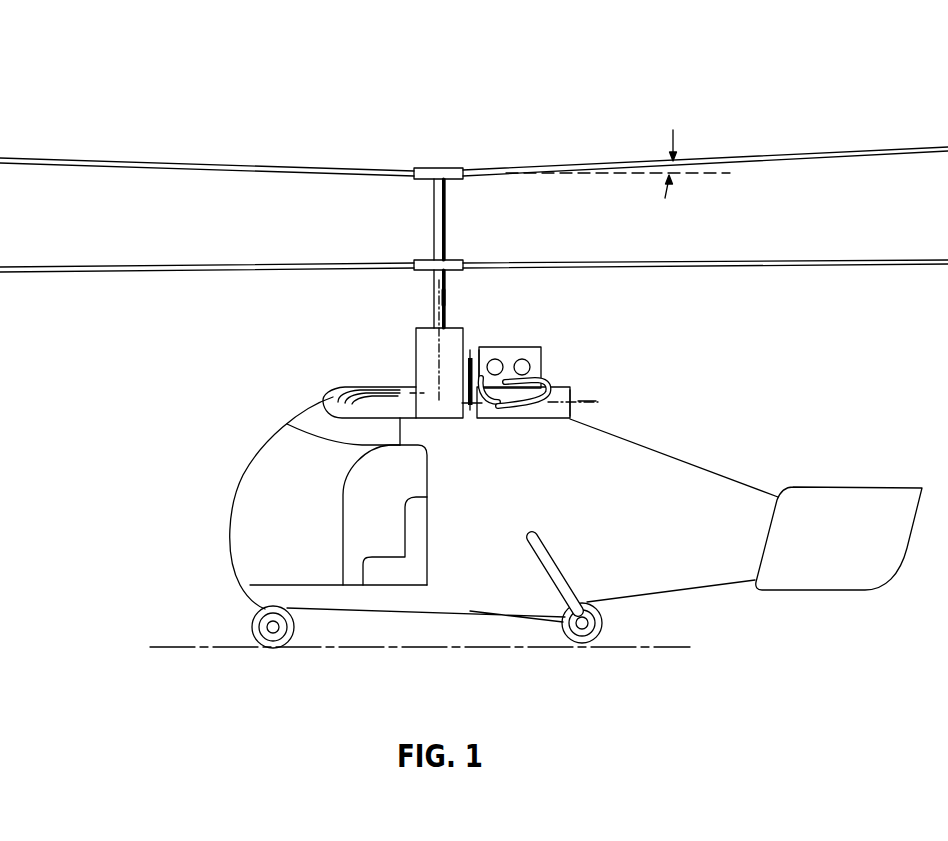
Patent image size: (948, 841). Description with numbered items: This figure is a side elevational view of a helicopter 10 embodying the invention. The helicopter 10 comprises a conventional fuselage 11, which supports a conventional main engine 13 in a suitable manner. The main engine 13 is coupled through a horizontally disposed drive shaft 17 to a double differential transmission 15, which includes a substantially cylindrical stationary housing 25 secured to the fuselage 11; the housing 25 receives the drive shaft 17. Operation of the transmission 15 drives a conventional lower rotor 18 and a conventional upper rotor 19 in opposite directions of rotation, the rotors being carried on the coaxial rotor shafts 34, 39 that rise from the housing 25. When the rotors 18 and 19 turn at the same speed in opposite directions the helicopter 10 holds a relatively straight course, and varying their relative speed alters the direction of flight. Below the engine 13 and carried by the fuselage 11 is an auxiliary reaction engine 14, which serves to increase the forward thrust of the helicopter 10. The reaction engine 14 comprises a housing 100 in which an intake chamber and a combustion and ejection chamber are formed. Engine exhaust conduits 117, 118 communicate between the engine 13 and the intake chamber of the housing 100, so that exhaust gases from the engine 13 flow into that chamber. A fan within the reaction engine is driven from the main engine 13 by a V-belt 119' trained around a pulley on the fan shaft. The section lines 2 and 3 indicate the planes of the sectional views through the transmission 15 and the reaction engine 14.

The section line 2- 2 is at (448, 297).
The section line 3- 3 is at (472, 407).
The helicopter 10 is at (730, 456).
The fuselage 11 is at (621, 594).
The main engine 13 is at (517, 350).
The auxiliary reaction engine 14 is at (590, 391).
The double differential transmission 15 is at (396, 356).
The drive shaft 17 is at (494, 348).
The lower rotor 18 is at (849, 266).
The upper rotor 19 is at (848, 152).
The stationary housing 25 is at (420, 340).
The rotor shaft 34 is at (436, 286).
The rotor shaft 39 is at (446, 231).
The housing 100 is at (556, 391).
The engine exhaust conduit 117 is at (514, 409).
The engine exhaust conduit 118 is at (494, 406).
The V-belt 119' is at (422, 380).